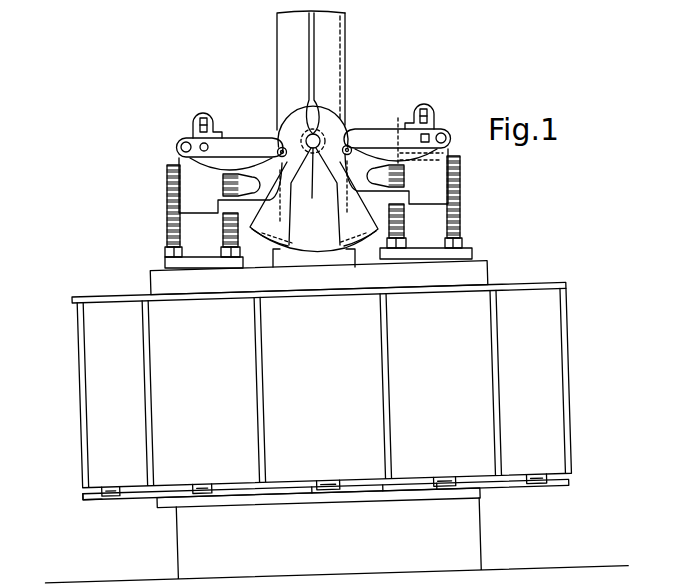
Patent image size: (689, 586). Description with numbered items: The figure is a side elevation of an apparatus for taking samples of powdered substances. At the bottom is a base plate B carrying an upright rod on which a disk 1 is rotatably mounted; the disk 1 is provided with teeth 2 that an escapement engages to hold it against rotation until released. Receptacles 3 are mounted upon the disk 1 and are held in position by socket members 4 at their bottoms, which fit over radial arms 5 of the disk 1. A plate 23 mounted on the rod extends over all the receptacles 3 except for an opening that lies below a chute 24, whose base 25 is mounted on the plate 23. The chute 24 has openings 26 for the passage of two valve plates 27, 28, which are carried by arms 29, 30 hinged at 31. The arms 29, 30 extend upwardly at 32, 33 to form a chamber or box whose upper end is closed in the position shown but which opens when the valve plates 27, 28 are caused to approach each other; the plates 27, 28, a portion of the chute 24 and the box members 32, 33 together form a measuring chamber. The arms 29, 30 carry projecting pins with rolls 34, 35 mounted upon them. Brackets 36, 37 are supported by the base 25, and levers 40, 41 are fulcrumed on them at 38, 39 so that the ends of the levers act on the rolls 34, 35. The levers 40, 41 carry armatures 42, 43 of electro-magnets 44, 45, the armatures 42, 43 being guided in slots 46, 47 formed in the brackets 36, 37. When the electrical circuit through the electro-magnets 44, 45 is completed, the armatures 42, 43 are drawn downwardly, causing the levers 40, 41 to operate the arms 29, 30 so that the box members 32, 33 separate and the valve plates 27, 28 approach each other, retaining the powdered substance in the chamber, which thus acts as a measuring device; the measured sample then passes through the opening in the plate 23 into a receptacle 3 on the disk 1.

The disk 1 is at (276, 504).
The teeth 2 is at (490, 491).
The receptacles 3 is at (549, 338).
The socket members 4 is at (113, 498).
The radial arms 5 is at (100, 497).
The base plate B is at (470, 543).
The plate 23 is at (509, 282).
The chute 24 is at (299, 259).
The base 25 is at (163, 282).
The openings 26 is at (329, 259).
The valve plate 27 is at (277, 248).
The valve plate 28 is at (360, 224).
The arm 29 is at (275, 229).
The arm 30 is at (366, 216).
The hinge 31 is at (314, 132).
The box member 32 is at (290, 28).
The box member 33 is at (331, 42).
The roll 34 is at (279, 140).
The roll 35 is at (349, 138).
The bracket 36 is at (192, 194).
The bracket 37 is at (433, 184).
The fulcrum 38 is at (178, 147).
The fulcrum 39 is at (446, 134).
The lever 40 is at (233, 146).
The lever 41 is at (405, 130).
The armature 42 is at (208, 113).
The armature 43 is at (414, 108).
The electro-magnet 44 is at (175, 228).
The electro-magnet 45 is at (459, 221).
The slot 46 is at (200, 116).
The slot 47 is at (432, 106).